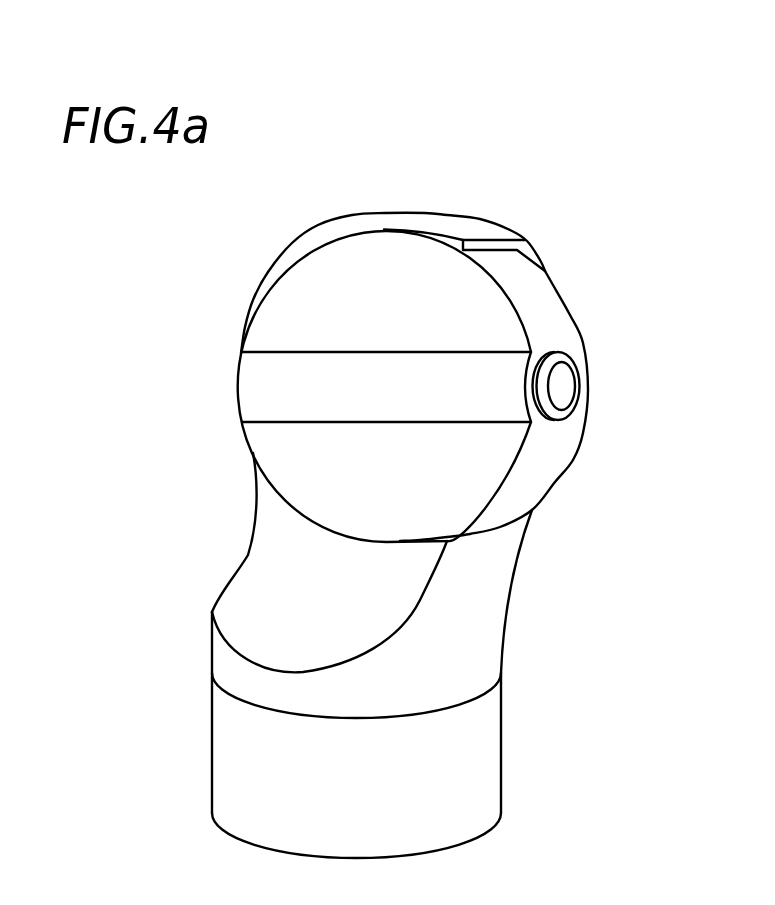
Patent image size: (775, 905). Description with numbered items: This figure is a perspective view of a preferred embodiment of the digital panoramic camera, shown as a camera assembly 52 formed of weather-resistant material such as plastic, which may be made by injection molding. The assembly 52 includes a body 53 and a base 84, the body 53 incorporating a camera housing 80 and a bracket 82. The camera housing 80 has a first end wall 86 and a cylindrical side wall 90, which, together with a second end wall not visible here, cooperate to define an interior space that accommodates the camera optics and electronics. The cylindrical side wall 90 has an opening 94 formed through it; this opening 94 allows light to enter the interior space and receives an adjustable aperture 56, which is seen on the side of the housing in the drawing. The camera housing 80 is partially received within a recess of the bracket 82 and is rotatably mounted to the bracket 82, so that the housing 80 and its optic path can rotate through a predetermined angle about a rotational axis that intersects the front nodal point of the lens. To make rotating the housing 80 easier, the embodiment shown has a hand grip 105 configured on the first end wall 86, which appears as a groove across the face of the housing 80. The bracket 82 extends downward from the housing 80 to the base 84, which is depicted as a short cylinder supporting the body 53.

The camera assembly 52 is at (164, 264).
The body 53 is at (222, 245).
The adjustable aperture 56 is at (562, 413).
The camera housing 80 is at (305, 473).
The bracket 82 is at (468, 603).
The base 84 is at (250, 768).
The first end wall 86 is at (287, 318).
The cylindrical side wall 90 is at (545, 308).
The opening 94 is at (628, 385).
The hand grip 105 is at (277, 398).